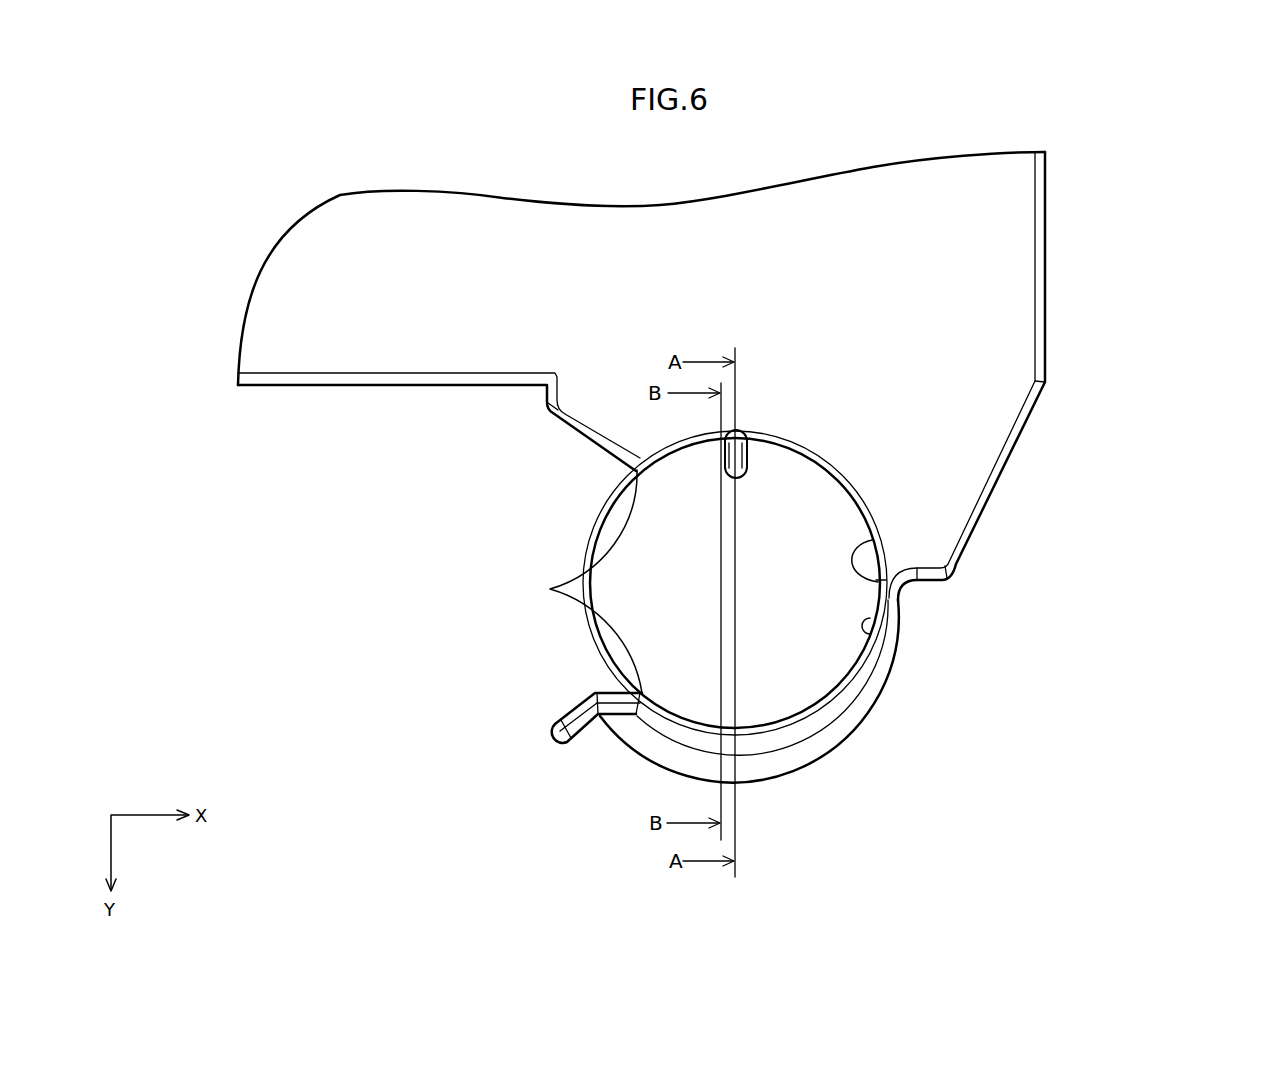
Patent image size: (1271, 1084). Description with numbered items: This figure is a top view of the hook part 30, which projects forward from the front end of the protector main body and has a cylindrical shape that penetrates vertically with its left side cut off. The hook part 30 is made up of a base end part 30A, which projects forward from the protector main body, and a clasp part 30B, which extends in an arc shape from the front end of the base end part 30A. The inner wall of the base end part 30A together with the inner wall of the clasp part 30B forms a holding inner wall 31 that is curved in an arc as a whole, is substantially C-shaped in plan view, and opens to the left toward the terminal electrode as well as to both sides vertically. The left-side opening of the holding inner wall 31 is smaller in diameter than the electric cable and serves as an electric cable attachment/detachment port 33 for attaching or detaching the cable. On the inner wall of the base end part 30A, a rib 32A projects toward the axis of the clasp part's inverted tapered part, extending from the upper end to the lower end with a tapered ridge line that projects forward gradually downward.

The hook part 30 is at (1110, 213).
The base end part 30A is at (967, 442).
The clasp part 30B is at (877, 690).
The holding inner wall 31 is at (866, 578).
The rib 32A is at (747, 452).
The electric cable attachment/detachment port 33 is at (550, 589).